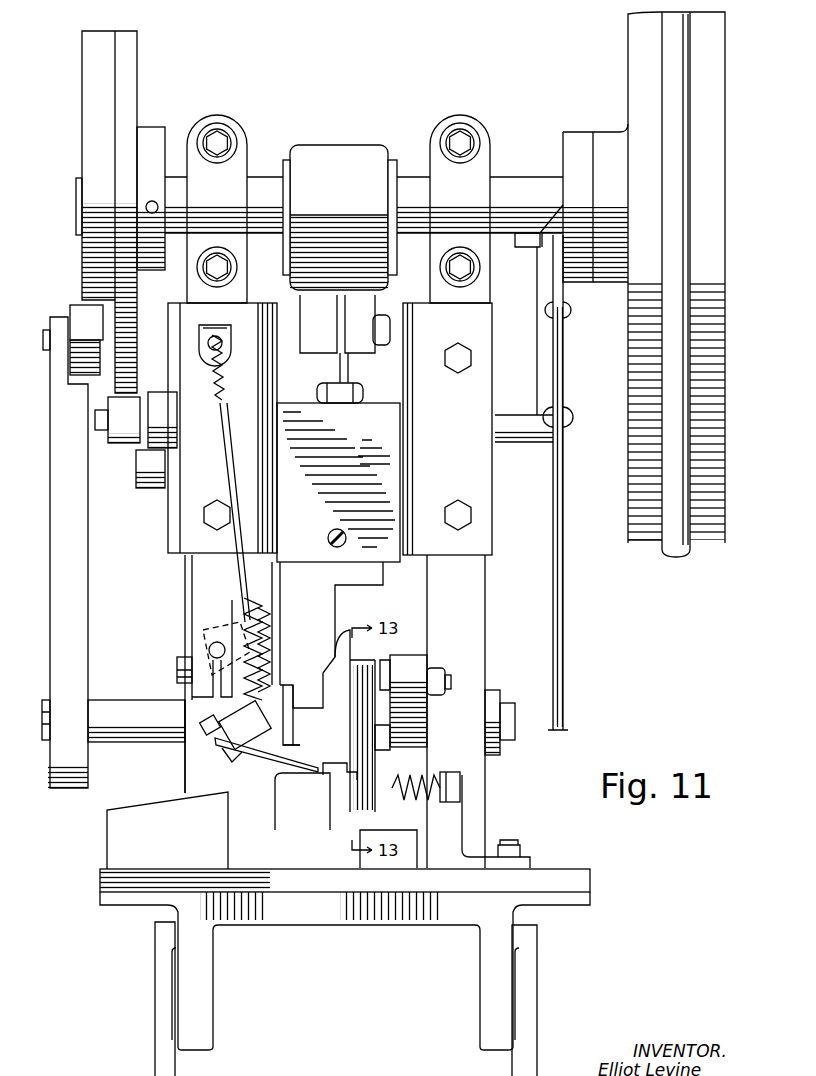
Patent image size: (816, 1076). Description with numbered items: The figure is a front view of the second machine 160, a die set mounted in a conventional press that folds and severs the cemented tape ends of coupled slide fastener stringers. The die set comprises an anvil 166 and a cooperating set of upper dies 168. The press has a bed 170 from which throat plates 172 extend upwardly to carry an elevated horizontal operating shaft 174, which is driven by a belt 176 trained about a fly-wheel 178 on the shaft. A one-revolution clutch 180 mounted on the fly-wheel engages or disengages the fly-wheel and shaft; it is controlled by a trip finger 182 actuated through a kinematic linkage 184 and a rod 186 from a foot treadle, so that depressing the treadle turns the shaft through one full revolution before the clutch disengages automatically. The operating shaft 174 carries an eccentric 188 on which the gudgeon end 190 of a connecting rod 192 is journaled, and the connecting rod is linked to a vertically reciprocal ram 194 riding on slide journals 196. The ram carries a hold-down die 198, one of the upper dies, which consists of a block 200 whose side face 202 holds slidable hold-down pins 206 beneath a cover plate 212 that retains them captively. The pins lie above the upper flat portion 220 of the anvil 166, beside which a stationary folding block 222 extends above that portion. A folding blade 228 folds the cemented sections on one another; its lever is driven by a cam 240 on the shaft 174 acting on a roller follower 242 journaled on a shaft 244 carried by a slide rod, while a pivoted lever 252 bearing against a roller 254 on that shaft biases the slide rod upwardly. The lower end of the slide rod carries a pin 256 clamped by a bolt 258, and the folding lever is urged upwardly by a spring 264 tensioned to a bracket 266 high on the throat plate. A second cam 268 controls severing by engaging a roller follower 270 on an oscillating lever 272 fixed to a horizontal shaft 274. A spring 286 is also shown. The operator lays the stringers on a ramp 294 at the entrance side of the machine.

The second machine 160 is at (84, 824).
The anvil 166 is at (318, 853).
The upper dies 168 is at (366, 618).
The bed 170 is at (590, 876).
The throat plates 172 is at (486, 652).
The operating shaft 174 is at (521, 178).
The belt 176 is at (683, 550).
The fly-wheel 178 is at (628, 534).
The one-revolution clutch 180 is at (596, 283).
The trip finger 182 is at (537, 276).
The kinematic linkage 184 is at (568, 418).
The rod 186 is at (563, 677).
The eccentric 188 is at (393, 162).
The gudgeon end 190 is at (340, 148).
The connecting rod 192 is at (364, 391).
The ram 194 is at (298, 415).
The slide journals 196 is at (272, 364).
The hold-down die 198 is at (308, 715).
The block 200 is at (332, 600).
The side face 202 is at (281, 604).
The hold-down pin 206 is at (291, 745).
The cover plate 212 is at (281, 649).
The upper flat portion 220 is at (298, 778).
The folding block 222 is at (335, 780).
The folding blade 228 is at (270, 762).
The cam 240 is at (135, 71).
The roller follower 242 is at (123, 445).
The shaft 244 is at (95, 421).
The pivoted lever 252 is at (152, 488).
The roller 254 is at (157, 392).
The pin 256 is at (217, 640).
The bolt 258 is at (177, 664).
The spring 264 is at (220, 397).
The bracket 266 is at (250, 326).
The cam 268 is at (82, 117).
The roller follower 270 is at (73, 311).
The oscillating lever 272 is at (60, 603).
The horizontal shaft 274 is at (42, 728).
The spring 286 is at (424, 775).
The ramp 294 is at (110, 852).